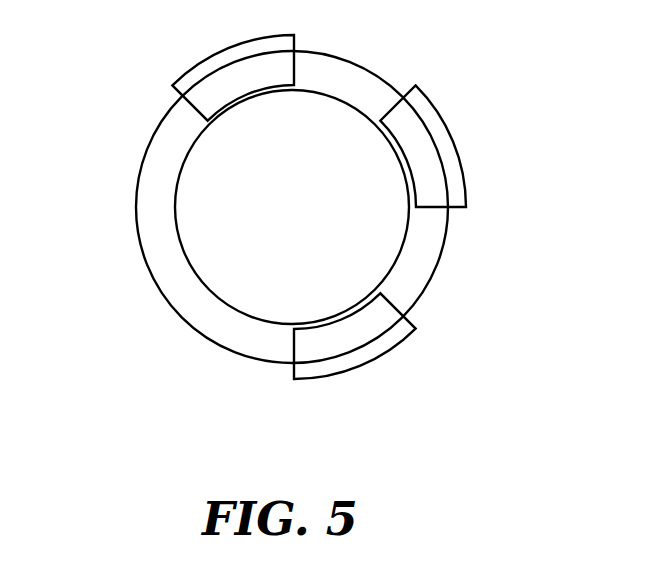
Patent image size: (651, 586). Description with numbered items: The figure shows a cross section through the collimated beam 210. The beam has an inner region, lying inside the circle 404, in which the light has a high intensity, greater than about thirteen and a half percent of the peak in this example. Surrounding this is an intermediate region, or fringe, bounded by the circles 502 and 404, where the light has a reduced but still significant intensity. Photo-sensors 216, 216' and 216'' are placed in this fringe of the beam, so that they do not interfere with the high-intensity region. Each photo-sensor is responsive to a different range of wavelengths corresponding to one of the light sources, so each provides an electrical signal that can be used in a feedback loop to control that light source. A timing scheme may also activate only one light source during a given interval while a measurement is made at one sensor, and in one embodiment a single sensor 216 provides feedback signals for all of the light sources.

The collimated beam 210 is at (108, 255).
The circle 502 is at (162, 123).
The circle 404 is at (183, 169).
The photo-sensor 216 is at (228, 65).
The photo-sensor 216' is at (455, 146).
The photo-sensor 216'' is at (335, 357).